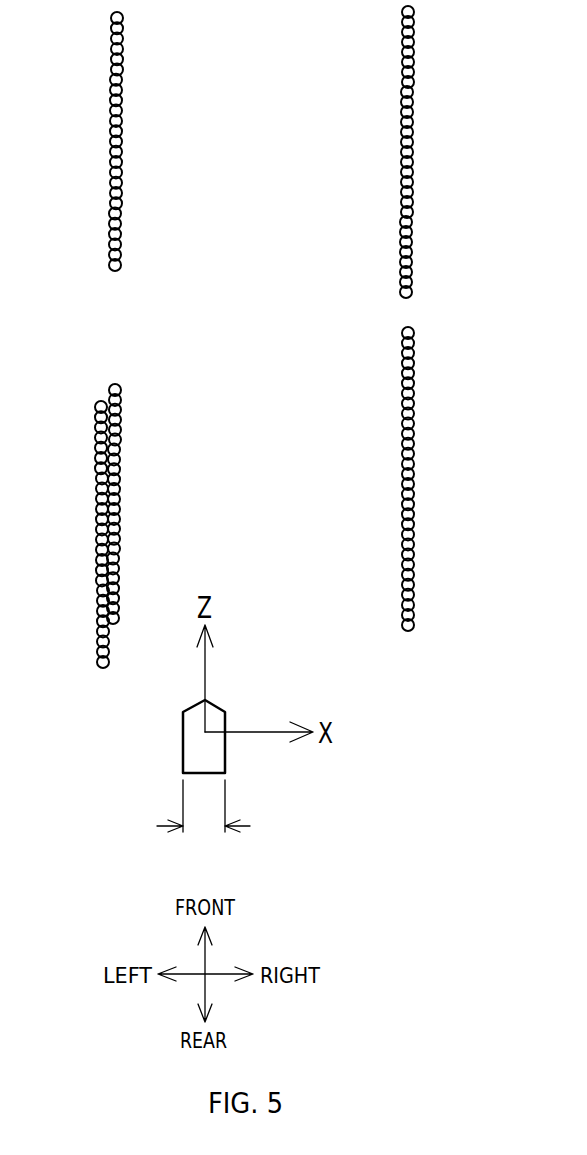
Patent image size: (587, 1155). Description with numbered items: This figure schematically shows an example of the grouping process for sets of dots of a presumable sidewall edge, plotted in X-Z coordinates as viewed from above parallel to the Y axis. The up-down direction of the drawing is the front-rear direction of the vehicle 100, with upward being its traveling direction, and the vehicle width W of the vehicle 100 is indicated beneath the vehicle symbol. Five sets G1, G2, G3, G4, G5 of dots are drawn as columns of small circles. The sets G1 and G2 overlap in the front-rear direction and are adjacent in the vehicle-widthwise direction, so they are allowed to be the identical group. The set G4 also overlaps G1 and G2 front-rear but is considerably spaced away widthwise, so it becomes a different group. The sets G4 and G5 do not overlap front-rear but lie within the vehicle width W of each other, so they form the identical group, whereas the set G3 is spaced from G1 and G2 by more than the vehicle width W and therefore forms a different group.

The set of the dots of the presumable sidewall edge G1 is at (87, 400).
The set of the dots of the presumable sidewall edge G2 is at (128, 382).
The set of the dots of the presumable sidewall edge G3 is at (102, 9).
The set of the dots of the presumable sidewall edge G4 is at (427, 320).
The set of the dots of the presumable sidewall edge G5 is at (429, 0).
The vehicle 100 is at (225, 762).
The vehicle width W is at (203, 806).